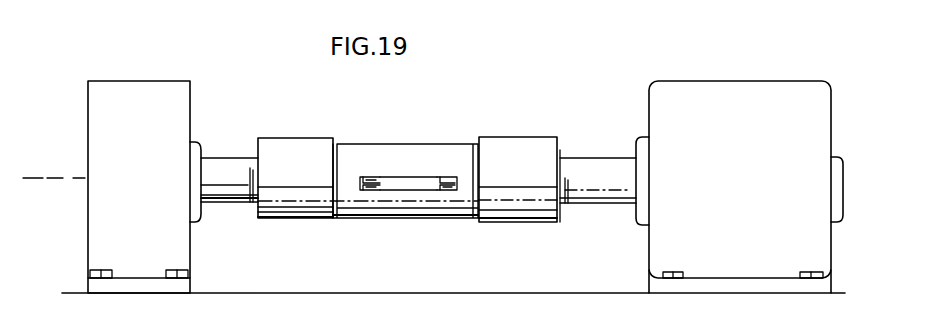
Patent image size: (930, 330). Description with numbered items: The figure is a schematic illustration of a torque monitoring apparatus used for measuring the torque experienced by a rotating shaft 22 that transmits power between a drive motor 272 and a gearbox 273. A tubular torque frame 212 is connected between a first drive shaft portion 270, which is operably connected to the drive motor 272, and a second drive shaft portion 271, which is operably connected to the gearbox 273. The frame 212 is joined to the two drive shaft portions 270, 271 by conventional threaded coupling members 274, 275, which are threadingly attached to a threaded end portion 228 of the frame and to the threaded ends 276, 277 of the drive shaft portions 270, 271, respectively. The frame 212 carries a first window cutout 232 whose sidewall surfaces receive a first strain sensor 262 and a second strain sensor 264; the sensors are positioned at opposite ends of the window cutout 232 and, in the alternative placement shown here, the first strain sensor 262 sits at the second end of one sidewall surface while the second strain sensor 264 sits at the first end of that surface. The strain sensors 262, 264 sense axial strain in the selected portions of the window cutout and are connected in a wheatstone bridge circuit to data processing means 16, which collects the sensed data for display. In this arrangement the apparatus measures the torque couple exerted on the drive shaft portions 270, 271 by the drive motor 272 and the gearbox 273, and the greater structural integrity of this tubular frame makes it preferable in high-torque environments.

The data processing means 16 is at (392, 185).
The shaft 22 is at (224, 158).
The torque frame 212 is at (415, 144).
The threaded end portion 228 is at (337, 218).
The first window cutout 232 is at (417, 177).
The first strain sensor 262 is at (368, 177).
The second strain sensor 264 is at (445, 177).
The first drive shaft portion 270 is at (613, 180).
The second drive shaft portion 271 is at (240, 157).
The drive motor 272 is at (742, 100).
The gearbox 273 is at (126, 81).
The threaded coupling member 274 is at (523, 137).
The threaded coupling member 275 is at (315, 137).
The threaded end 276 is at (565, 218).
The threaded end 277 is at (252, 201).